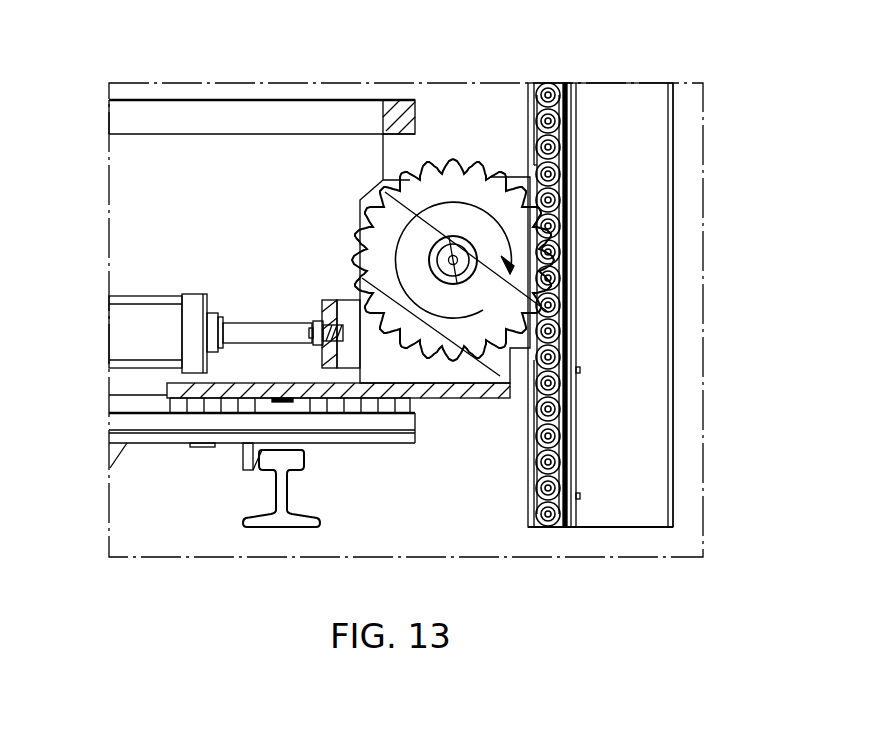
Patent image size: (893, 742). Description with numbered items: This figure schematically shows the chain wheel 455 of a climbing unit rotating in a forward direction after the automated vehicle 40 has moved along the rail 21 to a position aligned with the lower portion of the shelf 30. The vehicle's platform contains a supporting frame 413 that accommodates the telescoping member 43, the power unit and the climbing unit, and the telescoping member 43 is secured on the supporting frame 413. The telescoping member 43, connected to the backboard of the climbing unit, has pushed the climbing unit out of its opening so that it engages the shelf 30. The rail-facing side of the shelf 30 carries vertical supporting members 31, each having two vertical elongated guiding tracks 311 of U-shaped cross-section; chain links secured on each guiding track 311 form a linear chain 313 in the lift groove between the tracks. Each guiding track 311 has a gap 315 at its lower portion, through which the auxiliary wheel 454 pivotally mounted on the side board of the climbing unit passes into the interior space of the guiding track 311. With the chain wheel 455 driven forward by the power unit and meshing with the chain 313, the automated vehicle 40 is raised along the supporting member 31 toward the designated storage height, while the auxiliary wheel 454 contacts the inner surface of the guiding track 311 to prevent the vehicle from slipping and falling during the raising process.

The automated vehicle 40 is at (130, 97).
The supporting frame 413 is at (304, 112).
The chain wheel 455 is at (458, 158).
The auxiliary wheel 454 is at (562, 178).
The chain 313 is at (575, 230).
The shelf 30 is at (676, 254).
The telescoping member 43 is at (150, 300).
The gap 315 is at (513, 383).
The guiding track 311 is at (572, 425).
The rail 21 is at (277, 470).
The supporting member 31 is at (528, 503).